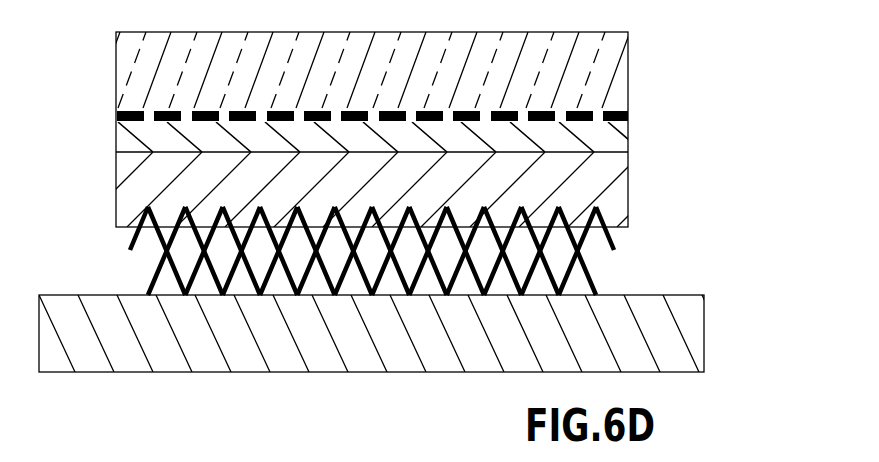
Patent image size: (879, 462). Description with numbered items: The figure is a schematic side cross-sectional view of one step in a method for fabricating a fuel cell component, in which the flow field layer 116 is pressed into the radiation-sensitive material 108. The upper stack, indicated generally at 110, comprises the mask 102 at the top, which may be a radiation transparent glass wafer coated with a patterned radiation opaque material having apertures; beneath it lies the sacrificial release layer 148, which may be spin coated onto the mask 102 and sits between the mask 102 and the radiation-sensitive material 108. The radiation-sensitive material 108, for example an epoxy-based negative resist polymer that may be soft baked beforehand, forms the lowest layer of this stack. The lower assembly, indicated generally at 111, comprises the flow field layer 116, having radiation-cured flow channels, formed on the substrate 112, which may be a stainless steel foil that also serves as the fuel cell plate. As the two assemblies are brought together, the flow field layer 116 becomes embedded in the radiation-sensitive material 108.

The mask 102 is at (628, 52).
The upper assembly 110 is at (383, 123).
The sacrificial release layer 148 is at (116, 134).
The radiation-sensitive material 108 is at (116, 206).
The flow field layer 116 is at (620, 240).
The lower assembly 111 is at (430, 287).
The substrate 112 is at (705, 334).